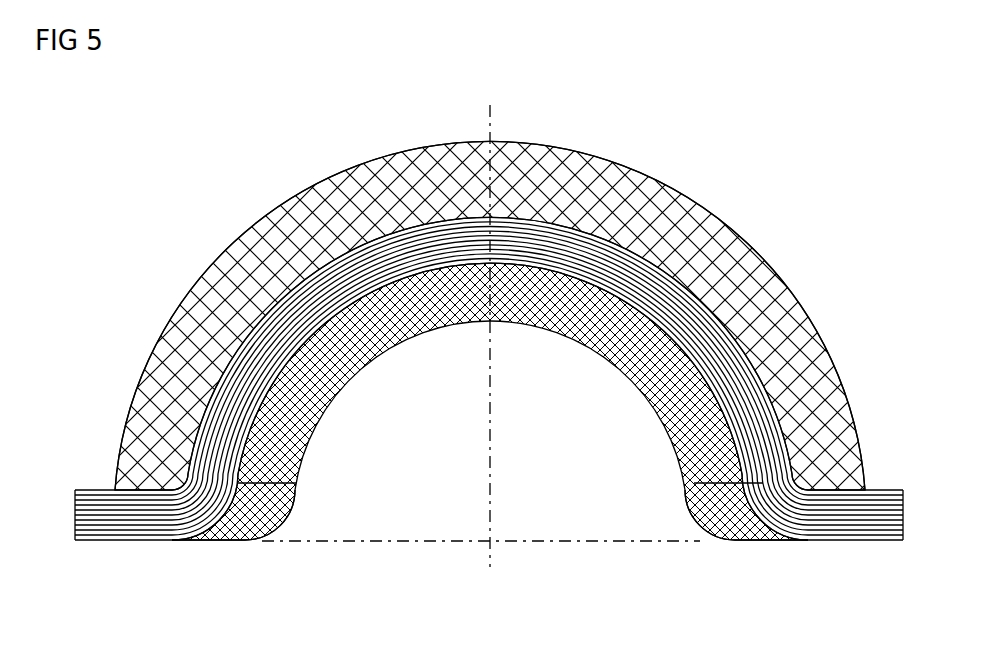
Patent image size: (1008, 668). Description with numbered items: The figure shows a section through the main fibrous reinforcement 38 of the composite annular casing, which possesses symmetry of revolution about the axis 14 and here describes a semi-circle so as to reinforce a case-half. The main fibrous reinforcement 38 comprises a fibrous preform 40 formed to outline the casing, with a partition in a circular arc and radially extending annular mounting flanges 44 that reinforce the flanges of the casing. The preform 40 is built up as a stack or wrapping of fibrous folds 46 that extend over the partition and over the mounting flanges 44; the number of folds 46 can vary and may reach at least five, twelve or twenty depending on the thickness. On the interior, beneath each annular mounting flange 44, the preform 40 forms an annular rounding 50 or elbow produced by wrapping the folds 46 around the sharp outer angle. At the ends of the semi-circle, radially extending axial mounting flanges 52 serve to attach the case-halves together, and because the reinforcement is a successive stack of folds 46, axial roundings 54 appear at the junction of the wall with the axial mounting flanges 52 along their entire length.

The axis 14 is at (487, 542).
The main fibrous reinforcement 38 is at (489, 357).
The fibrous preform 40 is at (708, 134).
The annular mounting flange 44 is at (205, 293).
The fibrous folds 46 is at (550, 220).
The annular rounding 50 is at (350, 370).
The axial mounting flanges 52 is at (132, 542).
The axial roundings 54 is at (247, 543).